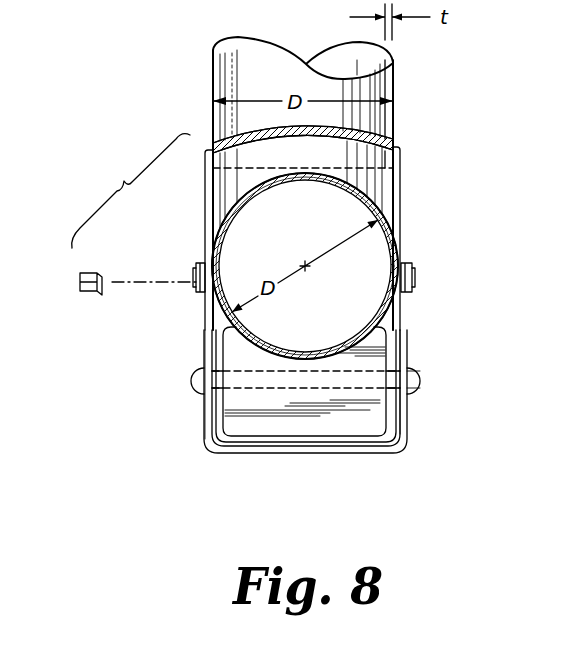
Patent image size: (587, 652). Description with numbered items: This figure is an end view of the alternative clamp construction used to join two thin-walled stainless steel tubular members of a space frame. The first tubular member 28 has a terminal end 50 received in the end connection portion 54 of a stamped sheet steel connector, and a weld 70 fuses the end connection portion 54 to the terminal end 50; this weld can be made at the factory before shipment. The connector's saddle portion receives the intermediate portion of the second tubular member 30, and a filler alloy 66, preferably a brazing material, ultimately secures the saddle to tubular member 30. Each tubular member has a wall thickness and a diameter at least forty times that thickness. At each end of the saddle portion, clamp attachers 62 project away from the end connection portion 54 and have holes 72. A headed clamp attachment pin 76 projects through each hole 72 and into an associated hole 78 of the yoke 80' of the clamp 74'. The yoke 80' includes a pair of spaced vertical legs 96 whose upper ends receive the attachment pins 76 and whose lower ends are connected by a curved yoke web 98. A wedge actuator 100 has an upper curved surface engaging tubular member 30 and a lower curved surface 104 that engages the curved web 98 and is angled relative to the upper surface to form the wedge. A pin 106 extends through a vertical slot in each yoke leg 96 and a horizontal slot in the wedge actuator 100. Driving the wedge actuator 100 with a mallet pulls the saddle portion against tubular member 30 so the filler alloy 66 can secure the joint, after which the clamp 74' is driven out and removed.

The tubular member 28 is at (200, 78).
The weld 70 is at (383, 145).
The terminal end 50 is at (393, 142).
The end connection portion 54 is at (400, 183).
The filler alloy 66 is at (215, 205).
The hole 72 is at (194, 277).
The hole 78 is at (195, 286).
The clamp attachment pin 76 is at (86, 298).
The clamp attacher 62 is at (214, 326).
The tubular member 30 is at (207, 345).
The vertical leg 96 is at (199, 370).
The pin 106 is at (417, 376).
The yoke 80' is at (472, 382).
The clamp 74' is at (143, 400).
The wedge actuator 100 is at (213, 434).
The web 98 is at (250, 453).
The lower curved surface 104 is at (343, 442).